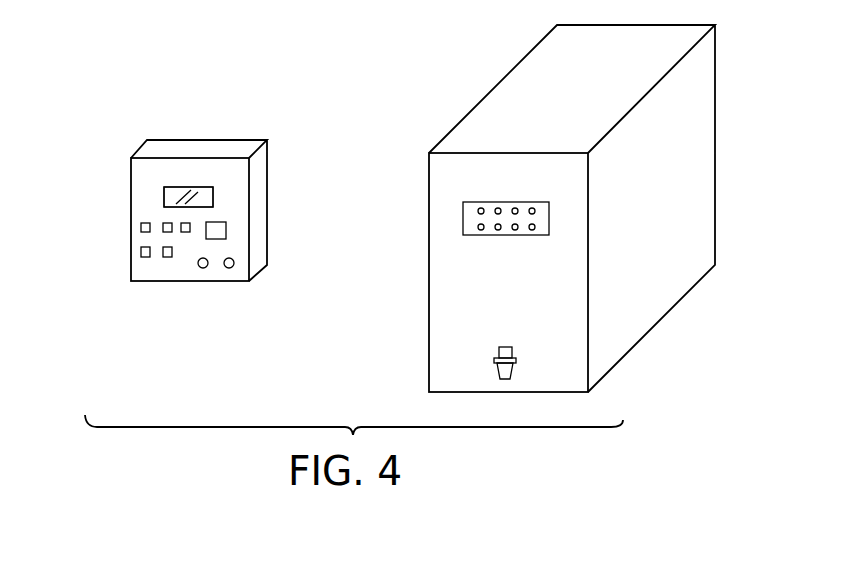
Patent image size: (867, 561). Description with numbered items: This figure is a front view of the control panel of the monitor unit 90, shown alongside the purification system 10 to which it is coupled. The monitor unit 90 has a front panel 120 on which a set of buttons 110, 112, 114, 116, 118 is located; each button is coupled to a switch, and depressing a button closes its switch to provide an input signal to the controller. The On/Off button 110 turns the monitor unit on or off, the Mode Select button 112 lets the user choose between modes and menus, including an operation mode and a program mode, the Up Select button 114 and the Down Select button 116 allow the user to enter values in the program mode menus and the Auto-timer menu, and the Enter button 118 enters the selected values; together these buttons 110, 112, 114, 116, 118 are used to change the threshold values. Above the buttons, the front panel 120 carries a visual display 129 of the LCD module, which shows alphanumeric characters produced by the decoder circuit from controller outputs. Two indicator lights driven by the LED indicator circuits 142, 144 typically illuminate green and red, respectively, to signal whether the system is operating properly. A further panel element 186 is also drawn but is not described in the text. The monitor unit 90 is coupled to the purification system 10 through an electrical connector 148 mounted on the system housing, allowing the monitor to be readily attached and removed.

The purification system 10 is at (659, 339).
The monitor unit 90 is at (213, 121).
The On/Off button 110 is at (141, 227).
The Mode Select button 112 is at (166, 222).
The Up Select button 114 is at (186, 232).
The Down Select button 116 is at (146, 258).
The Enter button 118 is at (167, 258).
The front panel 120 is at (151, 191).
The visual display 129 is at (214, 196).
The LED indicator circuit 142 is at (202, 268).
The LED indicator circuit 144 is at (230, 270).
The electrical connector 148 is at (463, 218).
The switch 186 is at (227, 230).